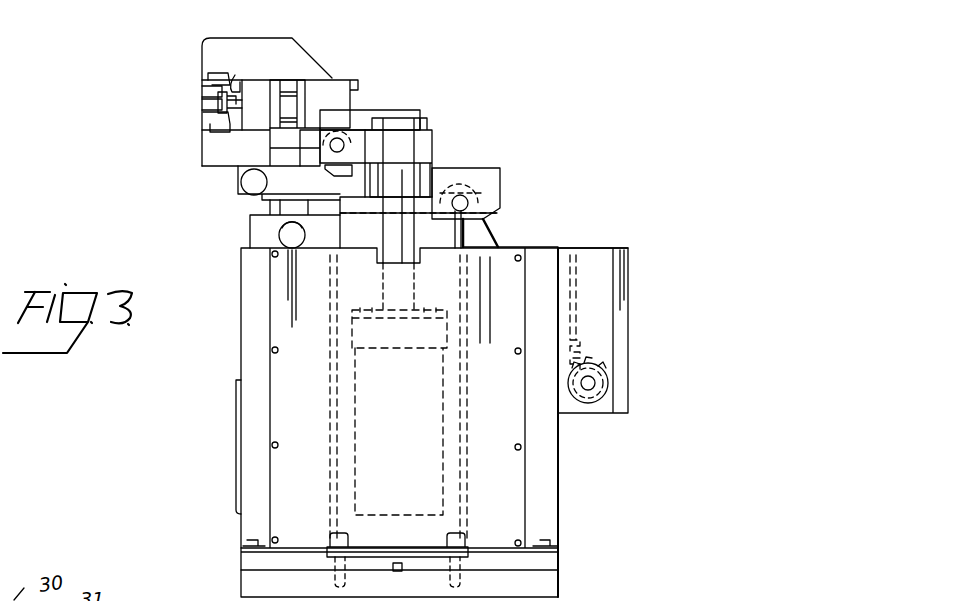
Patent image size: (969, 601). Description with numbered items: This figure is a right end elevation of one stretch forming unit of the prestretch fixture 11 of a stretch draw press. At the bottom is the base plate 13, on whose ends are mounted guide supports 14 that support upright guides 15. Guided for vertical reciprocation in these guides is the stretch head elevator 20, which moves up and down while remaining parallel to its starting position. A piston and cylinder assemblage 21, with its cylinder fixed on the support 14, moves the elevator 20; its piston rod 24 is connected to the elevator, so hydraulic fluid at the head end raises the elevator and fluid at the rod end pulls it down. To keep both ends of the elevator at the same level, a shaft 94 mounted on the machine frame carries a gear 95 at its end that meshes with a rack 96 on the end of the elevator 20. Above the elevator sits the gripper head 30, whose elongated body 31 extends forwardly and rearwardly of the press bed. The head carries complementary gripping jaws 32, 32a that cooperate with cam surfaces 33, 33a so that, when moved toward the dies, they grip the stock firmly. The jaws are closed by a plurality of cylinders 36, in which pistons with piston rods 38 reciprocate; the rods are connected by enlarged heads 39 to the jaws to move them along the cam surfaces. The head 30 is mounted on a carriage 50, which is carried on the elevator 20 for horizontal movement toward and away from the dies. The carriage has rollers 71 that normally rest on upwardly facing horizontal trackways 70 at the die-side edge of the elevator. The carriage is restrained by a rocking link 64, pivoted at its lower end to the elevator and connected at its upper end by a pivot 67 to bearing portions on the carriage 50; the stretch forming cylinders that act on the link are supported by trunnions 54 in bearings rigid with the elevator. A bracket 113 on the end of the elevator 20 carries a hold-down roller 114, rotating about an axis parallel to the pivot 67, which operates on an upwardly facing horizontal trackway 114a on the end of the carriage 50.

The gripper head 30 is at (224, 36).
The elongated body 31 is at (240, 50).
The gripping jaw 32 is at (203, 93).
The complementary gripping jaw 32a is at (207, 113).
The cam surface 33 is at (210, 87).
The cam surface 33a is at (203, 121).
The cylinder 36 is at (318, 93).
The piston rod 38 is at (240, 97).
The enlarged head 39 is at (235, 84).
The bracket 113 is at (347, 122).
The hold-down roller 114 is at (354, 150).
The horizontal trackway 114a is at (292, 165).
The carriage 50 is at (240, 175).
The roller 71 is at (247, 195).
The trackway 70 is at (247, 210).
The trunnion 54 is at (287, 238).
The piston rod 24 is at (390, 233).
The pivot 67 is at (463, 205).
The rocking link 64 is at (483, 238).
The stretch head elevator 20 is at (248, 232).
The prestretch fixture 11 is at (239, 339).
The upright guide 15 is at (547, 485).
The guide support 14 is at (550, 565).
The base plate 13 is at (545, 583).
The piston and cylinder assemblage 21 is at (470, 412).
The rack 96 is at (583, 260).
The gear 95 is at (603, 363).
The shaft 94 is at (597, 387).